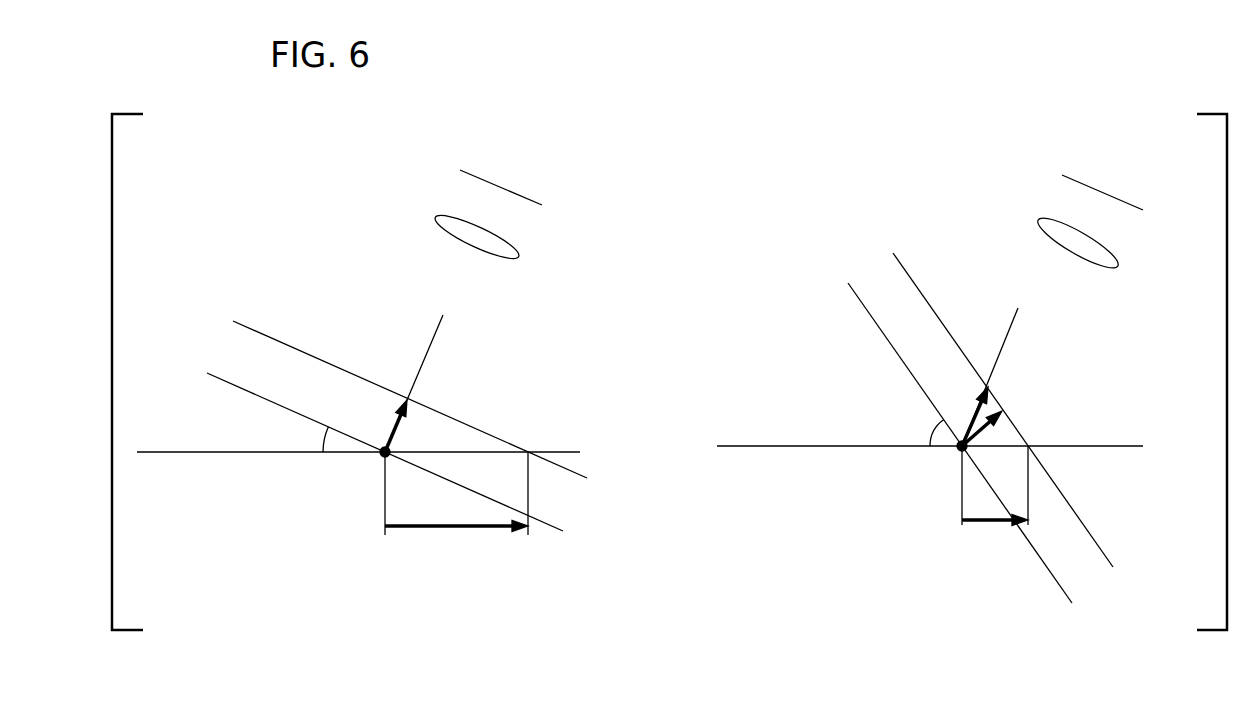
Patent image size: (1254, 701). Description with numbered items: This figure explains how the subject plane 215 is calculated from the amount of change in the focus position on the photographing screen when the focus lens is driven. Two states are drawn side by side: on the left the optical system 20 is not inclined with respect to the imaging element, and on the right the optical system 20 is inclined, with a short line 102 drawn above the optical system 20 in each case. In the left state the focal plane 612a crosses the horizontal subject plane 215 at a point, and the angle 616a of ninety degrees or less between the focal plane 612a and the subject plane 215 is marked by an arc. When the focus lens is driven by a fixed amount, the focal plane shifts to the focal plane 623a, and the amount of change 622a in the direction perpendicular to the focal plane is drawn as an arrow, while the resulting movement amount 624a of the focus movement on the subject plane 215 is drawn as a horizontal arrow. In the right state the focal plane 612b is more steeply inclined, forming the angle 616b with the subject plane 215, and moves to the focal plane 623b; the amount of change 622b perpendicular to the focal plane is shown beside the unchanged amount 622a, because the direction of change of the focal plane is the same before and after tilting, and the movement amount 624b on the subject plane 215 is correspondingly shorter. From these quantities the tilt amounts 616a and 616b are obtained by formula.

The optical system 20 is at (450, 217).
The display surface / screen 102 is at (503, 189).
The subject plane 215 is at (552, 452).
The focal plane 612a is at (542, 521).
The focal plane after focus lens movement 623a is at (570, 470).
The amount of change perpendicular to focal plane 622a is at (393, 428).
The angle between focal plane and subject plane 616a is at (324, 441).
The movement amount of focus movement on subject plane 624a is at (447, 528).
The focal plane 612b is at (1072, 601).
The focal plane after focus lens movement 623b is at (1105, 554).
The amount of change perpendicular to focal plane 622b is at (985, 430).
The angle between focal plane and subject plane 616b is at (930, 442).
The movement amount of focus movement on subject plane 624b is at (985, 523).